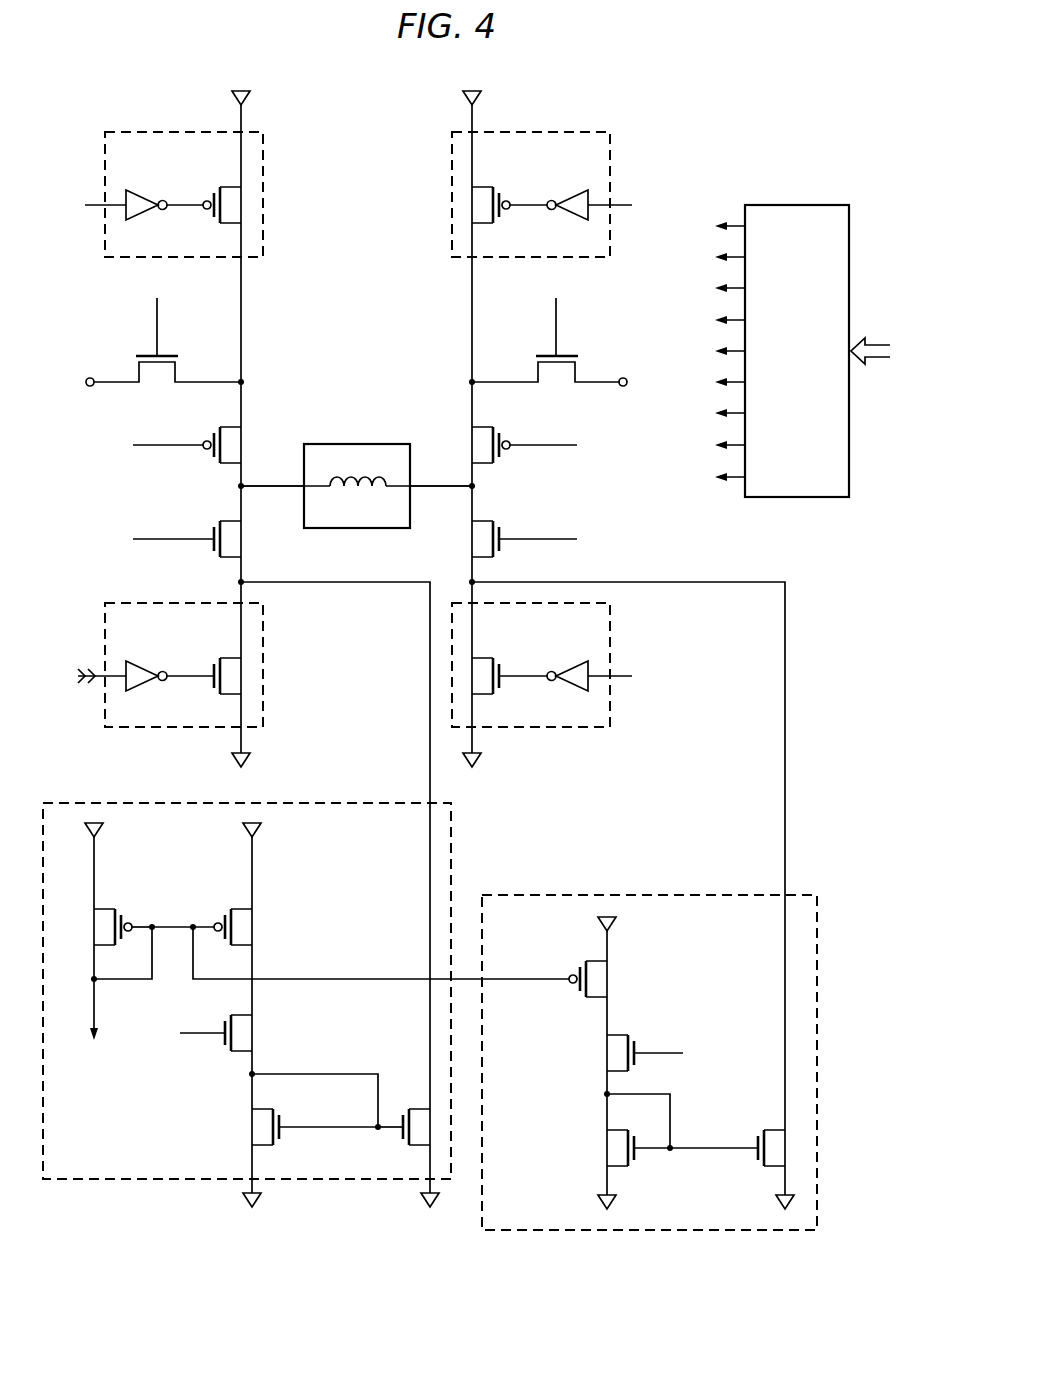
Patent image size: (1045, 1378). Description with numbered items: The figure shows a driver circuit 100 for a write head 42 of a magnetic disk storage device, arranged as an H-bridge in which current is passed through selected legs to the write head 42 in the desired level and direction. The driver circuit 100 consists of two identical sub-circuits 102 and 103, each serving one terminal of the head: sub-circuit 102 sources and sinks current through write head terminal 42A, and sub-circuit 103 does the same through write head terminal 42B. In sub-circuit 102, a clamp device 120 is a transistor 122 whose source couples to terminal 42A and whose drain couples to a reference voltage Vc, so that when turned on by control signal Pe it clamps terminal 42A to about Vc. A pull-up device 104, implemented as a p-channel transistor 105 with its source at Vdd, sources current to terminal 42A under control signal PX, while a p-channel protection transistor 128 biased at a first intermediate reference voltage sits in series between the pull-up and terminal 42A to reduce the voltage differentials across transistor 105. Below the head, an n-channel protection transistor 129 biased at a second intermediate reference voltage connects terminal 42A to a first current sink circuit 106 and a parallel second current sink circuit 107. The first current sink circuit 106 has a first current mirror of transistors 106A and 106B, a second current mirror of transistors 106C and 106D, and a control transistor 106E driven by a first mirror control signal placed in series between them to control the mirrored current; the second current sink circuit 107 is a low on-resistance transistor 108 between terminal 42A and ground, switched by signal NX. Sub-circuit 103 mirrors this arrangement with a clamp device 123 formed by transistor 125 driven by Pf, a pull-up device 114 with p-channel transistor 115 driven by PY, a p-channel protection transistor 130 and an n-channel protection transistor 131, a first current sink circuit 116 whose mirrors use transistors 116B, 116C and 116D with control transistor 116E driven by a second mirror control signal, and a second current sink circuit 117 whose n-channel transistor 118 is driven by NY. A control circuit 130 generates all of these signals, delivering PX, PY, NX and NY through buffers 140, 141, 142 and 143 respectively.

The driver circuit 100 is at (316, 58).
The sub-circuit 102 is at (112, 94).
The sub-circuit 103 is at (609, 94).
The pull-up device 104 is at (159, 169).
The p-channel transistor 105 is at (210, 220).
The first current sink circuit 106 is at (306, 1018).
The transistor 106A is at (128, 910).
The transistor 106B is at (218, 910).
The transistor 106C is at (283, 1118).
The transistor 106D is at (400, 1140).
The control transistor 106E is at (222, 1047).
The second current sink circuit 107 is at (154, 694).
The transistor 108 is at (211, 690).
The pull-up device 114 is at (554, 169).
The p-channel transistor 115 is at (503, 220).
The first current sink circuit 116 is at (649, 1090).
The transistor 116B is at (575, 966).
The transistor 116C is at (640, 1160).
The transistor 116D is at (756, 1140).
The control transistor 116E is at (640, 1042).
The second current sink circuit 117 is at (556, 694).
The n-channel transistor 118 is at (503, 690).
The clamp device 120 is at (135, 336).
The transistor 122 is at (66, 325).
The clamp device 123 is at (572, 336).
The transistor 125 is at (569, 354).
The p-channel protection transistor 128 is at (211, 460).
The n-channel protection transistor 129 is at (211, 554).
The control circuit 130 is at (503, 460).
The n-channel protection transistor 131 is at (503, 554).
The buffer 140 is at (144, 190).
The buffer 141 is at (570, 190).
The buffer 142 is at (144, 661).
The buffer 143 is at (570, 661).
The write head 42 is at (356, 462).
The write head terminal 42A is at (281, 485).
The write head terminal 42B is at (433, 485).